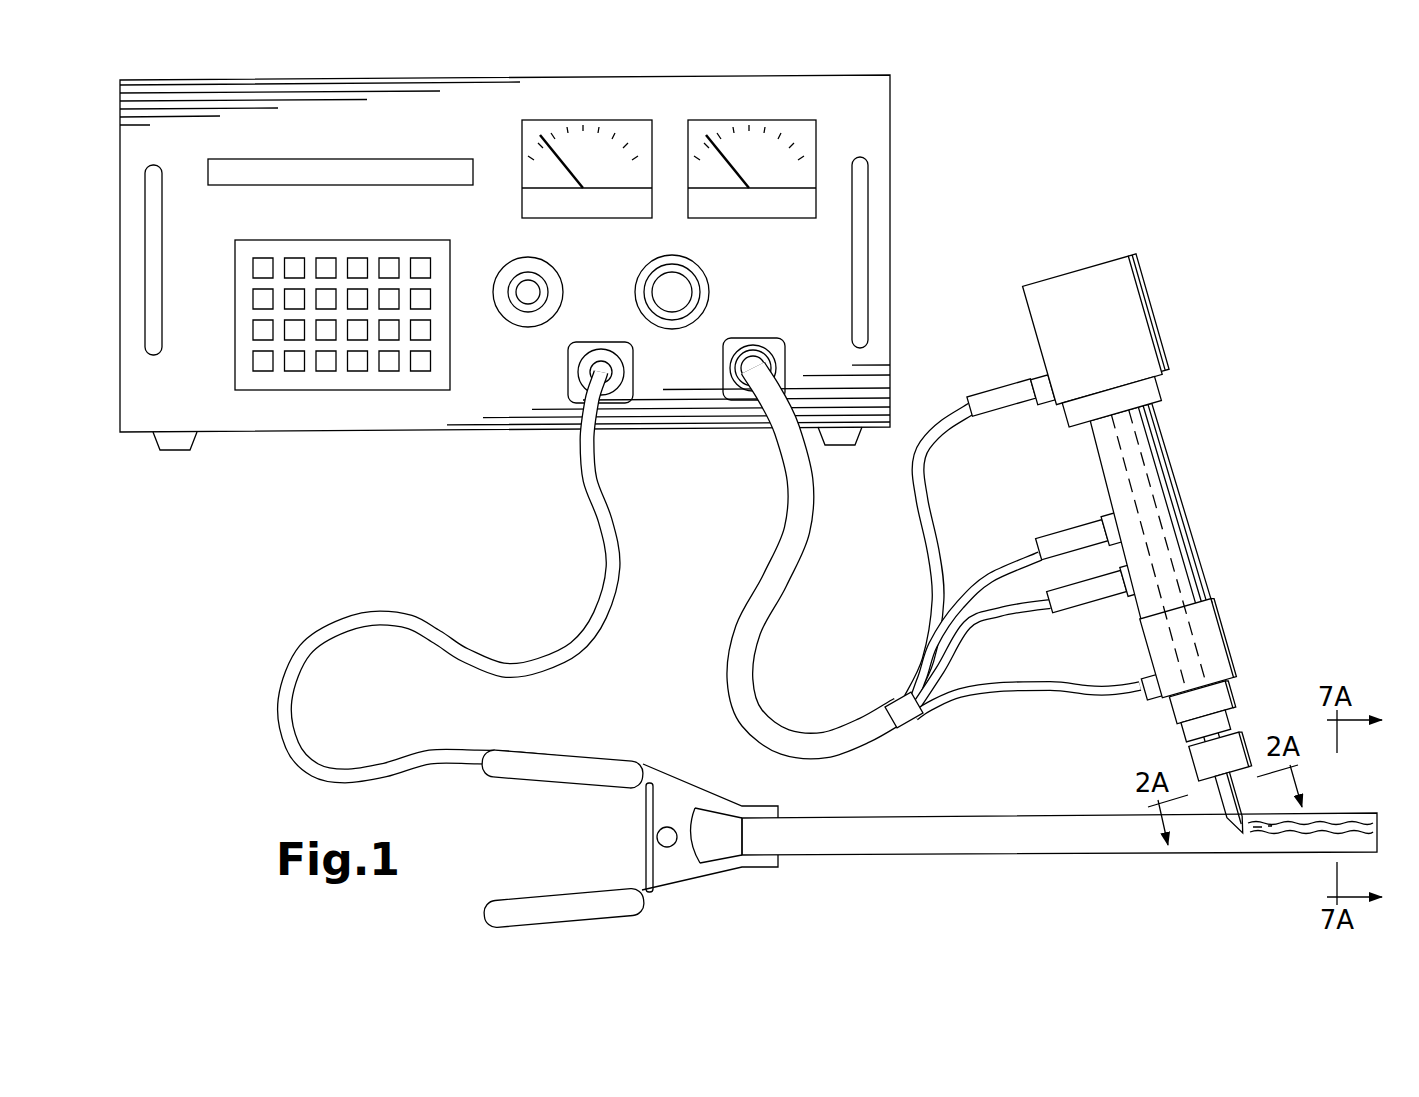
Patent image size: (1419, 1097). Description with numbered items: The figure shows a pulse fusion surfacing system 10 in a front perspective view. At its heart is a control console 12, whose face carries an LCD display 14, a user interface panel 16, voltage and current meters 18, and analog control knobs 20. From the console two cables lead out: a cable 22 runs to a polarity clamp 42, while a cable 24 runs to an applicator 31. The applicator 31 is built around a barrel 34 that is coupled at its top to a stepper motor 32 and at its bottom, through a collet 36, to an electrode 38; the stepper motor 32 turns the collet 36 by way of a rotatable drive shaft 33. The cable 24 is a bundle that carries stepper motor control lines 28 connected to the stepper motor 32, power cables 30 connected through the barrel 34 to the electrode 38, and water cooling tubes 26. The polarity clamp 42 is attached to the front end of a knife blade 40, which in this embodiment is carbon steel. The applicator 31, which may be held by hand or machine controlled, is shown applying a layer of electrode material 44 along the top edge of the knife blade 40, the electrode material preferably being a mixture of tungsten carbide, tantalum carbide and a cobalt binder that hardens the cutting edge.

The pulse fusion surfacing system 10 is at (149, 768).
The control console 12 is at (561, 262).
The LCD display 14 is at (307, 158).
The user interface panel 16 is at (235, 307).
The voltage and current meters 18 is at (815, 148).
The analog control knobs 20 is at (650, 258).
The cable 22 is at (582, 481).
The cable 24 is at (783, 480).
The water cooling tubes 26 is at (1057, 698).
The stepper motor control lines 28 is at (932, 460).
The power cables 30 is at (1037, 607).
The applicator 31 is at (1170, 574).
The stepper motor 32 is at (1100, 341).
The rotatable drive shaft 33 is at (1188, 648).
The barrel 34 is at (1149, 512).
The collet 36 is at (1210, 731).
The electrode 38 is at (1231, 804).
The knife blade 40 is at (966, 840).
The polarity clamp 42 is at (697, 892).
The layer of electrode material 44 is at (1352, 813).